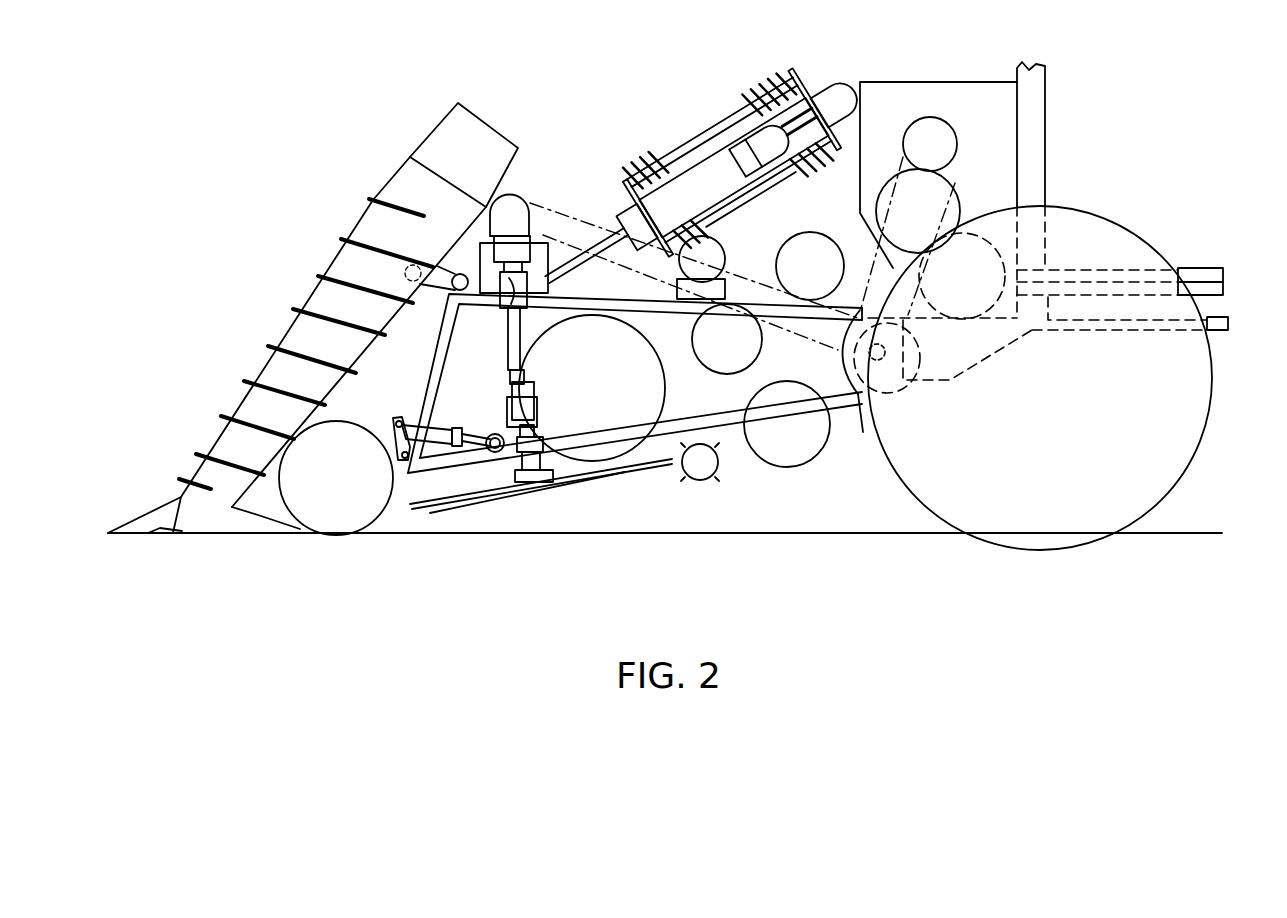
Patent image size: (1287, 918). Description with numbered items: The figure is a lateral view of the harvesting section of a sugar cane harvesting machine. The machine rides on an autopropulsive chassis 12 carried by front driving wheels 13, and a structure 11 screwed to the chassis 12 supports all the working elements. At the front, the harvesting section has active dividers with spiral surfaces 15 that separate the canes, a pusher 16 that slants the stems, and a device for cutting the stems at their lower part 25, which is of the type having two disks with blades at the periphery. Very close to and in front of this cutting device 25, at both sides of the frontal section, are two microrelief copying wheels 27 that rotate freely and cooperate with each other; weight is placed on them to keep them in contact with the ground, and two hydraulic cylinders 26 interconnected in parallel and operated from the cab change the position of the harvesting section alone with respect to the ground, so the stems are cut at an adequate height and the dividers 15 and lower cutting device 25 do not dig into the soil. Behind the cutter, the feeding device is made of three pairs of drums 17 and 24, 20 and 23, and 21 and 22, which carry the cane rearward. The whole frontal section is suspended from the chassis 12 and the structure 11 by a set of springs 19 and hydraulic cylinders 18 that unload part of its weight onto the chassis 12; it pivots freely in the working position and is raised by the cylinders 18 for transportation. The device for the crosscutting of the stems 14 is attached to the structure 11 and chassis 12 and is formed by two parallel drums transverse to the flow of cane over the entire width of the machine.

The structure 11 is at (1033, 120).
The chassis 12 is at (945, 362).
The front driving wheels 13 is at (1092, 473).
The device for the crosscutting of the stems 14 is at (938, 190).
The active dividers with spiral surfaces 15 is at (377, 227).
The pusher 16 is at (440, 270).
The drum 17 is at (607, 340).
The hydraulic cylinders 18 is at (668, 202).
The springs 19 is at (735, 108).
The drum 20 is at (733, 318).
The drum 21 is at (828, 252).
The drum 22 is at (863, 432).
The drum 23 is at (777, 453).
The drum 24 is at (695, 473).
The device for cutting the stems at their lower part 25 is at (530, 483).
The hydraulic cylinders 26 is at (470, 440).
The microrelief copying wheels 27 is at (323, 510).